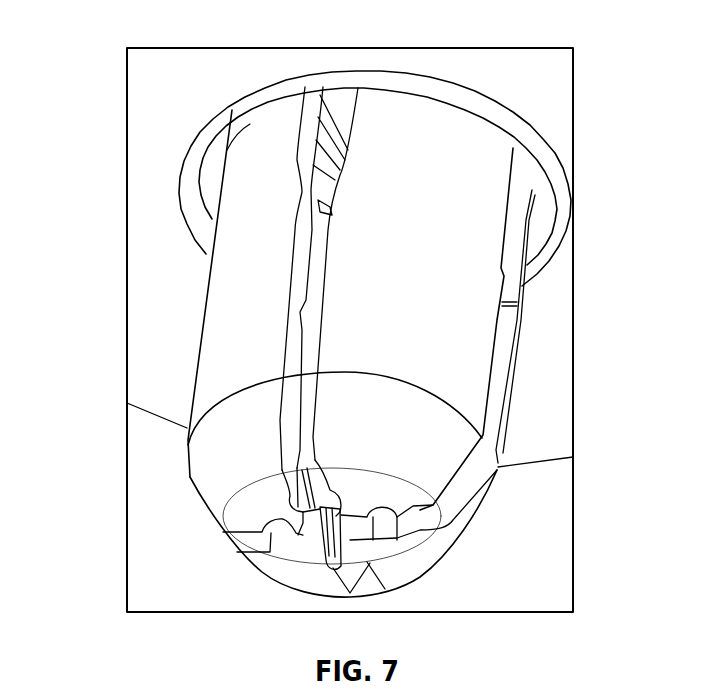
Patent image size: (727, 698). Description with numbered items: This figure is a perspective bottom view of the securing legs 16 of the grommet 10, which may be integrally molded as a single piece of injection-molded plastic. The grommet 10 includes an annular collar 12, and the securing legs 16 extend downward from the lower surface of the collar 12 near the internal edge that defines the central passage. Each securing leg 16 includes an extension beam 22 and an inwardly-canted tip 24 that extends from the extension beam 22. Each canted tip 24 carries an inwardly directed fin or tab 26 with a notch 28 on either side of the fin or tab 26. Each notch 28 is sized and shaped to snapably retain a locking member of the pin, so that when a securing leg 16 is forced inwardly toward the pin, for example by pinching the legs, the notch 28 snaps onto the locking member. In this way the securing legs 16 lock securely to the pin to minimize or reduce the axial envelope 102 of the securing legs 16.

The grommet 10 is at (121, 41).
The annular collar 12 is at (148, 348).
The securing leg 16 is at (470, 357).
The extension beam 22 is at (493, 200).
The inwardly-canted tip 24 is at (213, 473).
The fin or tab 26 is at (307, 543).
The notch 28 is at (296, 452).
The axial envelope 102 is at (227, 135).